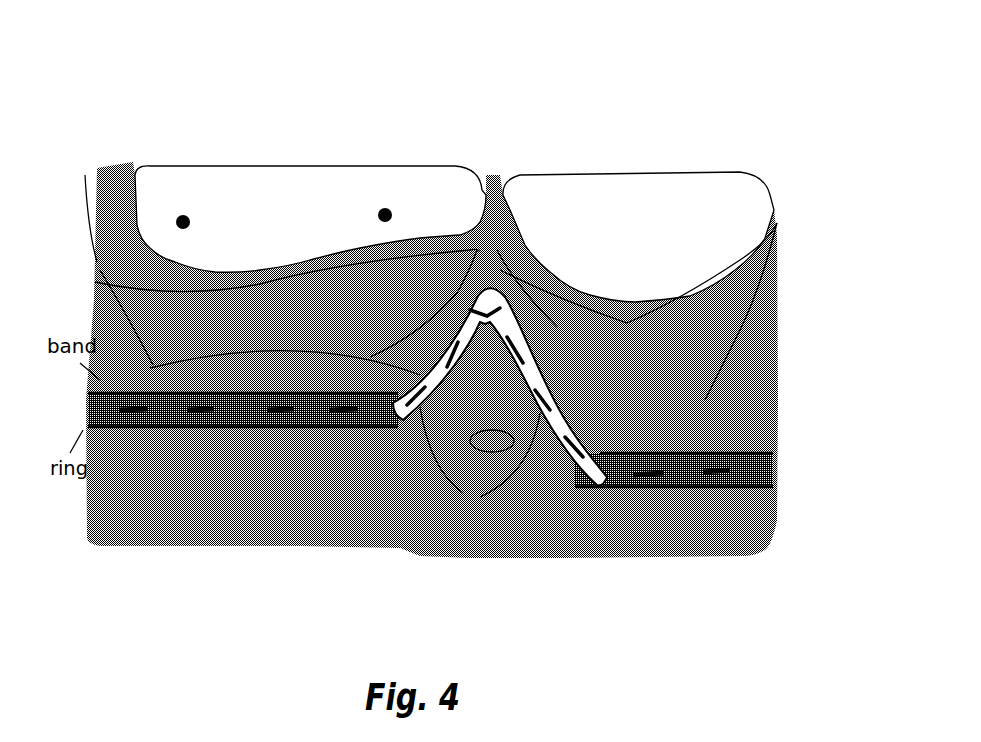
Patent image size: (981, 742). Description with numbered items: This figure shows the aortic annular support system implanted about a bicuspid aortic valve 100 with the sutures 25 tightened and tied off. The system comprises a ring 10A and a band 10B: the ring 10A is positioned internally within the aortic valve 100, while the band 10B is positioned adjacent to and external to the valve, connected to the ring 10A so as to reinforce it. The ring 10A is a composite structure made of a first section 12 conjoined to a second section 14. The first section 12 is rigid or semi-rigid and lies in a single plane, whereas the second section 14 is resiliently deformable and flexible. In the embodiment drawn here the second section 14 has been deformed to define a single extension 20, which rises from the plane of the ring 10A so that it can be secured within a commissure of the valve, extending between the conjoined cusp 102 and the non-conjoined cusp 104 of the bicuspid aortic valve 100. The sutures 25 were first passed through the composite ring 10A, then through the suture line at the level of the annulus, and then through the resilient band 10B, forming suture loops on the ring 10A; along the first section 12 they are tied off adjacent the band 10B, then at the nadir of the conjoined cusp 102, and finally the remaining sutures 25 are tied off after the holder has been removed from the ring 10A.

The bicuspid aortic valve 100 is at (421, 293).
The conjoined cusp 102 is at (316, 150).
The non-conjoined cusp 104 is at (641, 152).
The ring 10A is at (176, 447).
The band 10B is at (300, 365).
The first section 12 is at (250, 422).
The second section 14 is at (500, 404).
The extension 20 is at (530, 377).
The sutures 25 is at (367, 423).